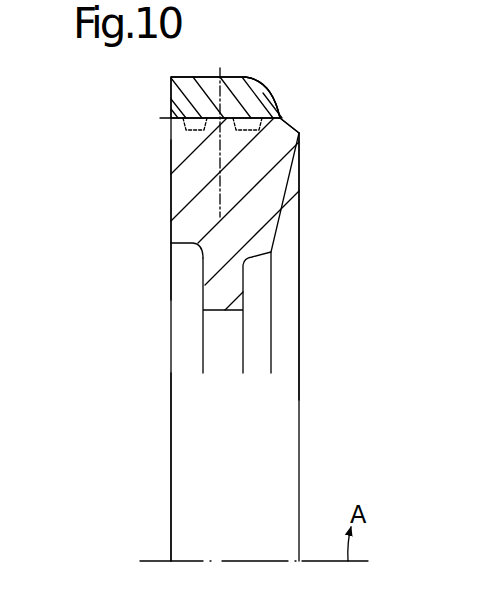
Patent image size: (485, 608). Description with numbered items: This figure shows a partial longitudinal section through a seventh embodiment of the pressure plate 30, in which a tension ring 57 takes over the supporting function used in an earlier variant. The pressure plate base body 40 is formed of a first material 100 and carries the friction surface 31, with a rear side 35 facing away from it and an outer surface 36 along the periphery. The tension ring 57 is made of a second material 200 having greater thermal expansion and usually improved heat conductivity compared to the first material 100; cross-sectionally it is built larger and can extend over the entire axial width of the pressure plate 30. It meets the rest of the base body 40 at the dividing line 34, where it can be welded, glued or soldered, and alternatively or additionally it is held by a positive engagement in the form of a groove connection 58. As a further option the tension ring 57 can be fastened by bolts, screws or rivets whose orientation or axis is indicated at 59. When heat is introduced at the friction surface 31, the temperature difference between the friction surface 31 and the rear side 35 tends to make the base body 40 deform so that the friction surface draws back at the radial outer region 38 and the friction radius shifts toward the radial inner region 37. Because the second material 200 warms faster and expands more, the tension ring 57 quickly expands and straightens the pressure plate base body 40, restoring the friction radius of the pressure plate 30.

The pressure plate 30 is at (116, 374).
The friction surface 31 is at (171, 208).
The dividing line 34 is at (171, 120).
The rear side 35 is at (301, 118).
The outer surface 36 is at (299, 133).
The radial inner region 37 is at (157, 239).
The radial outer region 38 is at (142, 120).
The pressure plate base body 40 is at (219, 353).
The tension ring 57 is at (253, 97).
The groove connection 58 is at (171, 172).
The fastening element axis 59 is at (219, 68).
The first material 100 is at (262, 217).
The second material 200 is at (172, 103).